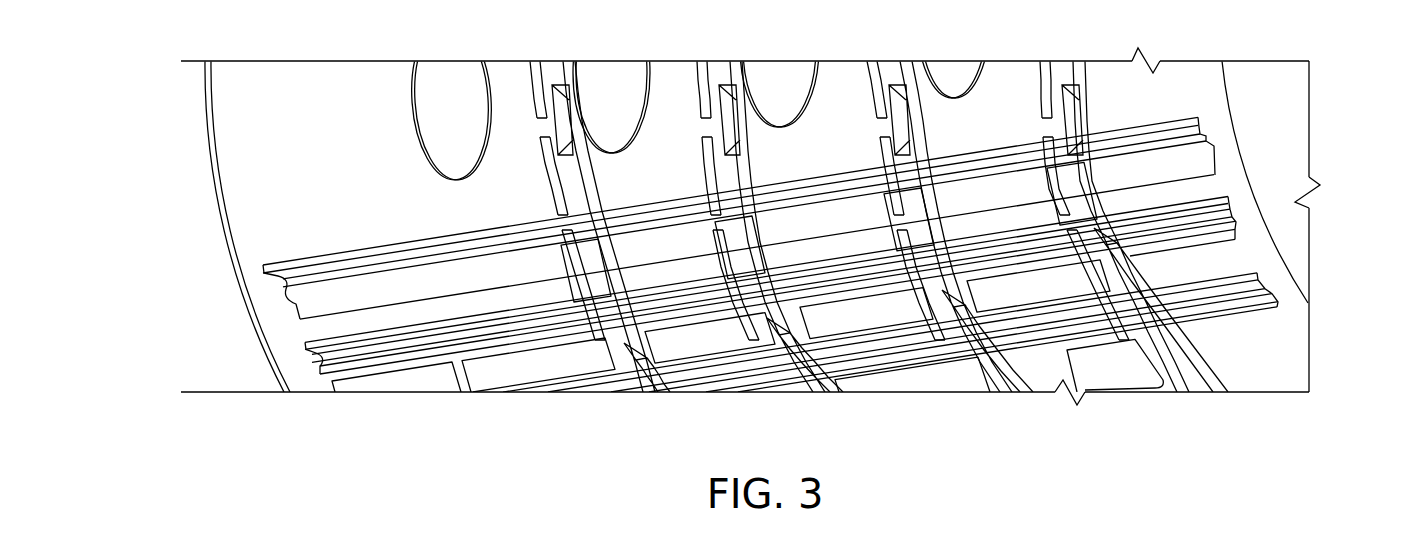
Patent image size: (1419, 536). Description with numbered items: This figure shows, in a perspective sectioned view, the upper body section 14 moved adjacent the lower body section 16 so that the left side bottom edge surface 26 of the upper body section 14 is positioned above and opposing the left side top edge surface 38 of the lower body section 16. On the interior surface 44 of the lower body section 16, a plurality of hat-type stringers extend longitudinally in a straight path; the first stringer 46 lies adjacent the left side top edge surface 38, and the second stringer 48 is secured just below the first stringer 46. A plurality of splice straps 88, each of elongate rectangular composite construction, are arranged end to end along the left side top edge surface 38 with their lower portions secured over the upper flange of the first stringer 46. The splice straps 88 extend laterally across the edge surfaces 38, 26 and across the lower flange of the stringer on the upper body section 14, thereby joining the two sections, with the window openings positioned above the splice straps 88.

The upper body section 14 is at (1234, 74).
The lower body section 16 is at (1282, 236).
The left side bottom edge surface 26 is at (278, 325).
The left side top edge surface 38 is at (268, 322).
The interior surface 44 is at (1278, 357).
The first stringer 46 is at (1242, 206).
The second stringer 48 is at (1277, 291).
The splice straps 88 is at (1220, 151).